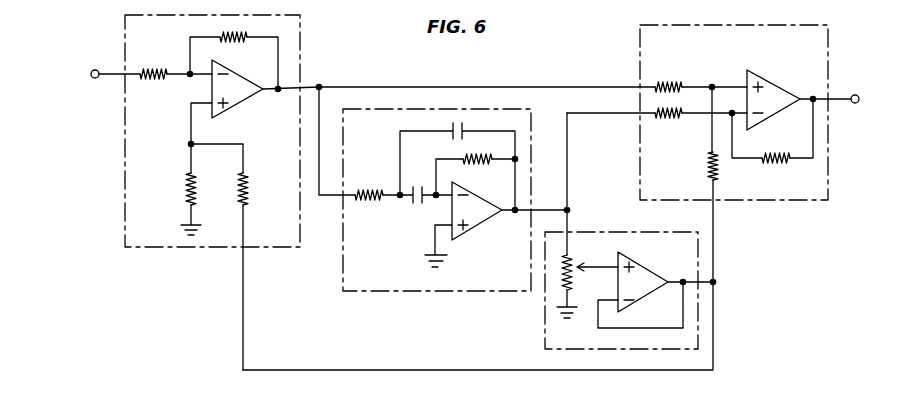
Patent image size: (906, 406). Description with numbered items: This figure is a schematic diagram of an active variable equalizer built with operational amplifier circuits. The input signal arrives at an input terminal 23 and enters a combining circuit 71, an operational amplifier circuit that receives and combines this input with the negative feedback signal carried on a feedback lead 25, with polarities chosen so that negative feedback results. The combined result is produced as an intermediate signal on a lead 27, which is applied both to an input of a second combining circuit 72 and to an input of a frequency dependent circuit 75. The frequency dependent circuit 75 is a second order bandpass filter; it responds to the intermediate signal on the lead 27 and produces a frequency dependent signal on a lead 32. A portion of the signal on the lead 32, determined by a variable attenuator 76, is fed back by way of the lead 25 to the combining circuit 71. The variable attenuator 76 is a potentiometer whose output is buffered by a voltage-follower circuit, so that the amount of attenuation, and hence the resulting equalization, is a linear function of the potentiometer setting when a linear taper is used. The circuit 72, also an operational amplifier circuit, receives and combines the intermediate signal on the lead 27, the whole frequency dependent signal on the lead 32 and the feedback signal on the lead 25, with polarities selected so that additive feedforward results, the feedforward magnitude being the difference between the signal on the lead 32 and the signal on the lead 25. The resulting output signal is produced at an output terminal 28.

The input terminal 23 is at (94, 70).
The combining circuit 71 is at (152, 46).
The lead 27 is at (367, 70).
The frequency dependent circuit 75 is at (371, 137).
The lead 32 is at (552, 207).
The circuit 72 is at (668, 58).
The output terminal 28 is at (852, 103).
The variable attenuator 76 is at (686, 260).
The negative feedback lead 25 is at (717, 256).